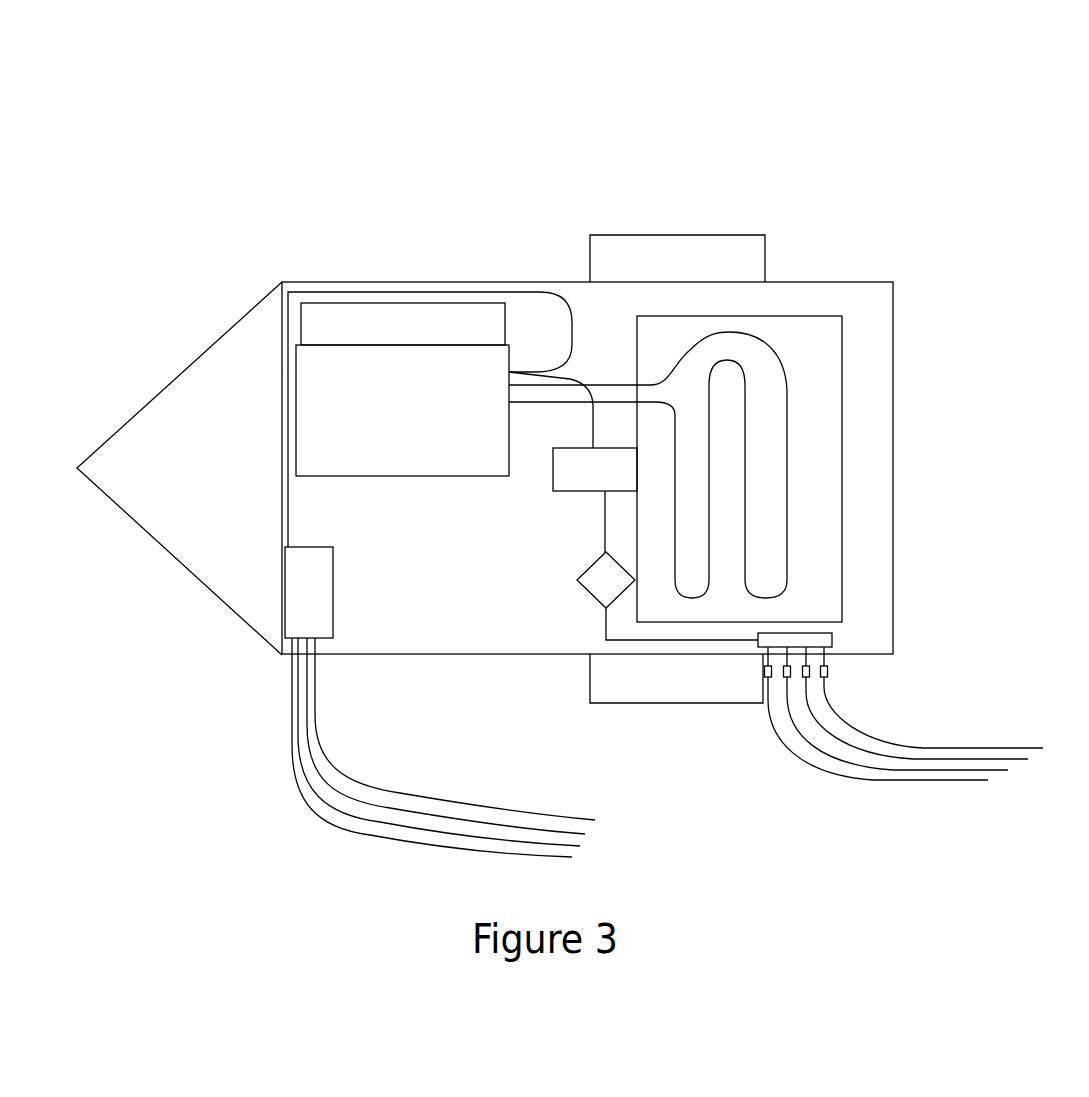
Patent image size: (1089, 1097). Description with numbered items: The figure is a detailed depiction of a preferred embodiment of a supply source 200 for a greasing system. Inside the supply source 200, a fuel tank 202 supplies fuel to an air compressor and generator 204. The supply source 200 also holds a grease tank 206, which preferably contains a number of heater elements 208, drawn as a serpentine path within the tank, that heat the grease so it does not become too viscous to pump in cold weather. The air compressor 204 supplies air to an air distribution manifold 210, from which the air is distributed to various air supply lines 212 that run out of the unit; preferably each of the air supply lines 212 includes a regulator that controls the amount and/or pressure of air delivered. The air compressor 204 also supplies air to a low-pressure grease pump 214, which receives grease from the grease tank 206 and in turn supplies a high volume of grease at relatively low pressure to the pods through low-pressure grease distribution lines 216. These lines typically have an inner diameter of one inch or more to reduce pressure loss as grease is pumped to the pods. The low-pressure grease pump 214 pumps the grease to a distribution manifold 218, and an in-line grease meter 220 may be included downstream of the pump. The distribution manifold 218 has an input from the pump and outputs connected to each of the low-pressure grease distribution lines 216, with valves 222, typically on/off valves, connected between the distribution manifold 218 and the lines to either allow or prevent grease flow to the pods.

The supply source 200 is at (647, 125).
The fuel tank 202 is at (415, 322).
The air compressor and generator 204 is at (338, 373).
The grease tank 206 is at (815, 460).
The heater elements 208 is at (785, 371).
The air distribution manifold 210 is at (300, 560).
The air supply lines 212 is at (303, 717).
The low-pressure grease pump 214 is at (627, 470).
The low-pressure grease distribution lines 216 is at (843, 745).
The distribution manifold 218 is at (805, 640).
The in-line grease meter 220 is at (603, 587).
The valves 222 is at (830, 668).